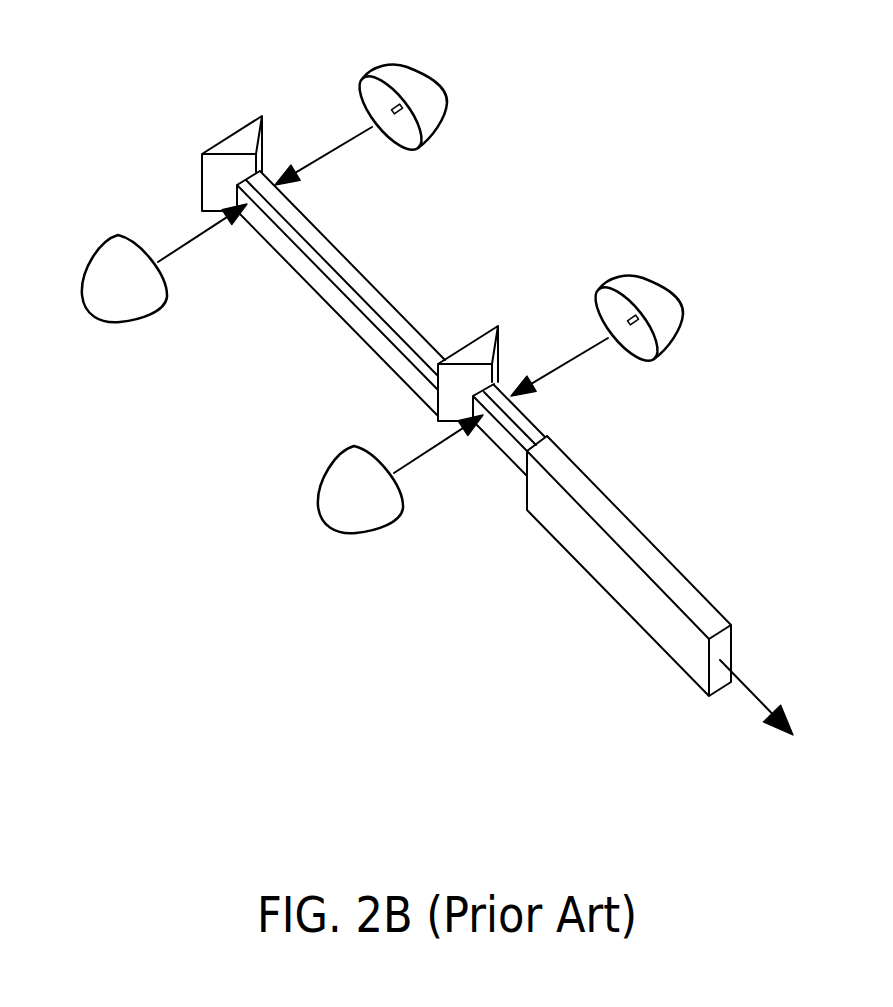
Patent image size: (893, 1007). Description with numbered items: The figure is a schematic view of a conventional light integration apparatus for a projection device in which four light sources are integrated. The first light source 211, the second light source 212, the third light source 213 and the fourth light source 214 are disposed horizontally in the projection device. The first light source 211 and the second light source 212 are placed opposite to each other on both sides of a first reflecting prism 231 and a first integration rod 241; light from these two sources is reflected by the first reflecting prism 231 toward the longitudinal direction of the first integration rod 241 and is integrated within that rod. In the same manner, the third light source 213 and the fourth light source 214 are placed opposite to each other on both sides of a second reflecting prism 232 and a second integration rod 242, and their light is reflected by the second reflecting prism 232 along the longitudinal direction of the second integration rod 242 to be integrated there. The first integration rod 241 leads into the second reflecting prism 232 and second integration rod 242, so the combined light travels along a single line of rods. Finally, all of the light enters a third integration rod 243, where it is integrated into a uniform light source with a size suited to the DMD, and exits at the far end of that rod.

The first light source 211 is at (428, 75).
The second light source 212 is at (103, 313).
The third light source 213 is at (665, 285).
The fourth light source 214 is at (338, 525).
The first reflecting prism 231 is at (242, 140).
The second reflecting prism 232 is at (475, 352).
The first integration rod 241 is at (357, 285).
The second integration rod 242 is at (520, 432).
The third integration rod 243 is at (650, 555).